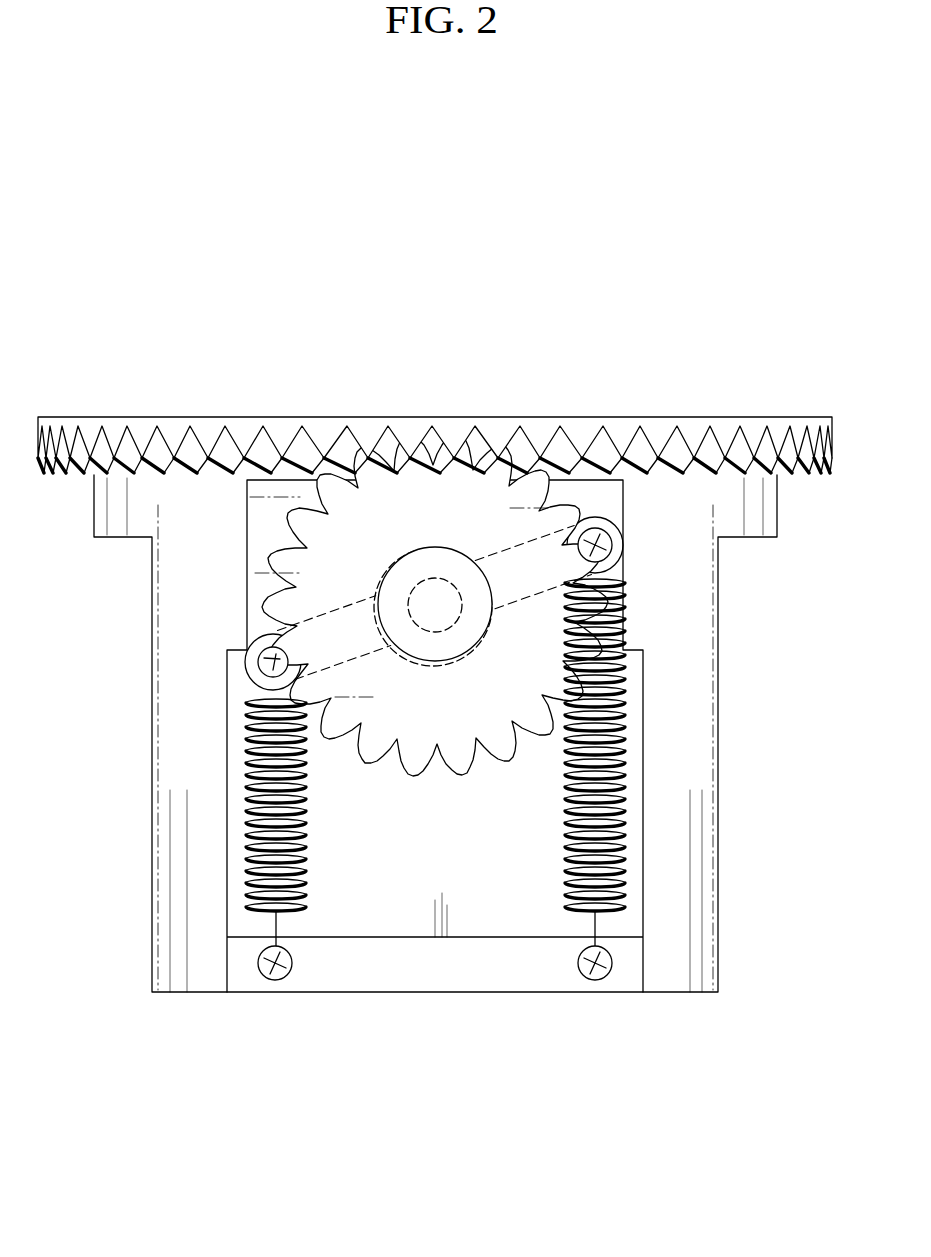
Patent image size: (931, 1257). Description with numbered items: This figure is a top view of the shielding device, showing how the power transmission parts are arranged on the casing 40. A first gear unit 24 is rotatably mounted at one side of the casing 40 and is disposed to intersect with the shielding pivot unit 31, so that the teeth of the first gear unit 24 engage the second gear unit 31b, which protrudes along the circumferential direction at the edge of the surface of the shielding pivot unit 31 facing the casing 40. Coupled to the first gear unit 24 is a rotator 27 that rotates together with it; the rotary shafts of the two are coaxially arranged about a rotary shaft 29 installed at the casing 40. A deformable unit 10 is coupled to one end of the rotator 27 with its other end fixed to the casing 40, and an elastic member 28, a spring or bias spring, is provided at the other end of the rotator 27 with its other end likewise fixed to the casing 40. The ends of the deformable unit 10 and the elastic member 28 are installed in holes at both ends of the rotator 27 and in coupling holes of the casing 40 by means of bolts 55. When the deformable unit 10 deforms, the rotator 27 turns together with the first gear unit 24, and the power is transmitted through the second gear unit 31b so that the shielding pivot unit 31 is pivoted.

The deformable unit 10 is at (628, 817).
The first gear unit 24 is at (392, 780).
The rotator 27 is at (599, 517).
The elastic member 28 is at (253, 813).
The rotary shaft 29 is at (430, 560).
The shielding pivot unit 31 is at (435, 386).
The second gear unit 31b is at (248, 440).
The casing 40 is at (777, 520).
The bolts 55 is at (280, 978).